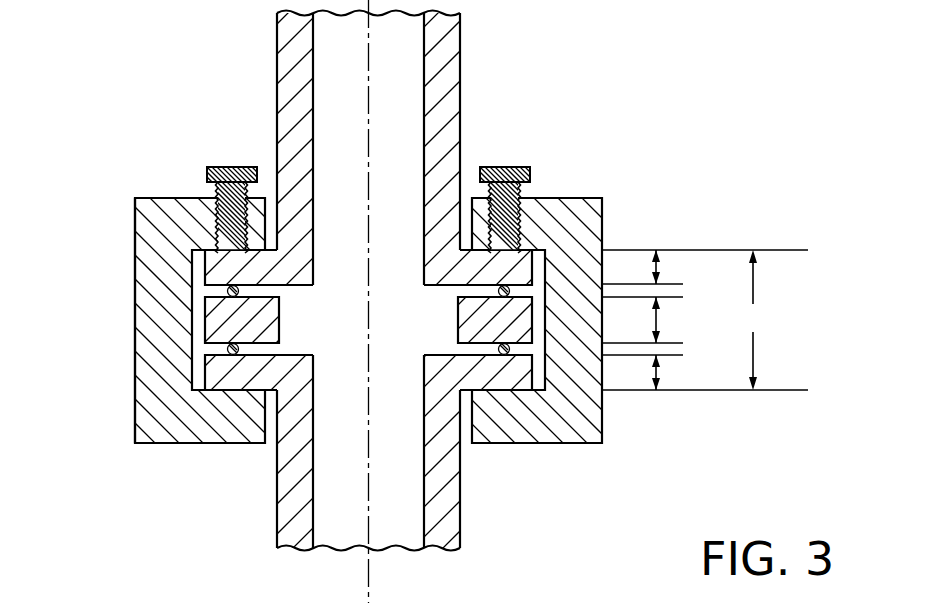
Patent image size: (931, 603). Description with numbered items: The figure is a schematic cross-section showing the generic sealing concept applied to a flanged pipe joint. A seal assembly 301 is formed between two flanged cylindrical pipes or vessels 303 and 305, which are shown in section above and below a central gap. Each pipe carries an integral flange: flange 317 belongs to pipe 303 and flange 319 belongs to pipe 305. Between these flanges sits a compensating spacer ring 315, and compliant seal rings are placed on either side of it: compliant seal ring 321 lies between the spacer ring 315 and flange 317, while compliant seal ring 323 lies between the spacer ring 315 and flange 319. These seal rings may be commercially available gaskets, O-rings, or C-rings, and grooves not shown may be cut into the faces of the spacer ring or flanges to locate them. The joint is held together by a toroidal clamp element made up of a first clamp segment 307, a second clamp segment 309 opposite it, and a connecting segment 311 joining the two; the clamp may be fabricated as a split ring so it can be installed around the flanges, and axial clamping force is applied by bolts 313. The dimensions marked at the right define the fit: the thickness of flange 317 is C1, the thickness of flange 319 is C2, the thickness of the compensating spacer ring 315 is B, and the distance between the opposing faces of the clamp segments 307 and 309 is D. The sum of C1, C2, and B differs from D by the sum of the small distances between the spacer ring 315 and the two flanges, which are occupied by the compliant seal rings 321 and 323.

The seal assembly 301 is at (600, 152).
The flanged cylindrical pipe or vessel 303 is at (277, 80).
The flanged cylindrical pipe or vessel 305 is at (275, 507).
The first clamp segment 307 is at (158, 197).
The second clamp segment 309 is at (213, 418).
The connecting segment 311 is at (148, 287).
The bolt 313 is at (233, 167).
The compensating spacer ring 315 is at (225, 318).
The flange 317 is at (137, 222).
The flange 319 is at (135, 410).
The compliant seal ring 321 is at (225, 265).
The compliant seal ring 323 is at (225, 375).
The thickness of flange C1 is at (662, 268).
The dimension of compensating spacer ring B is at (658, 320).
The thickness of flange C2 is at (658, 373).
The distance between opposing faces of clamp elements D is at (705, 320).